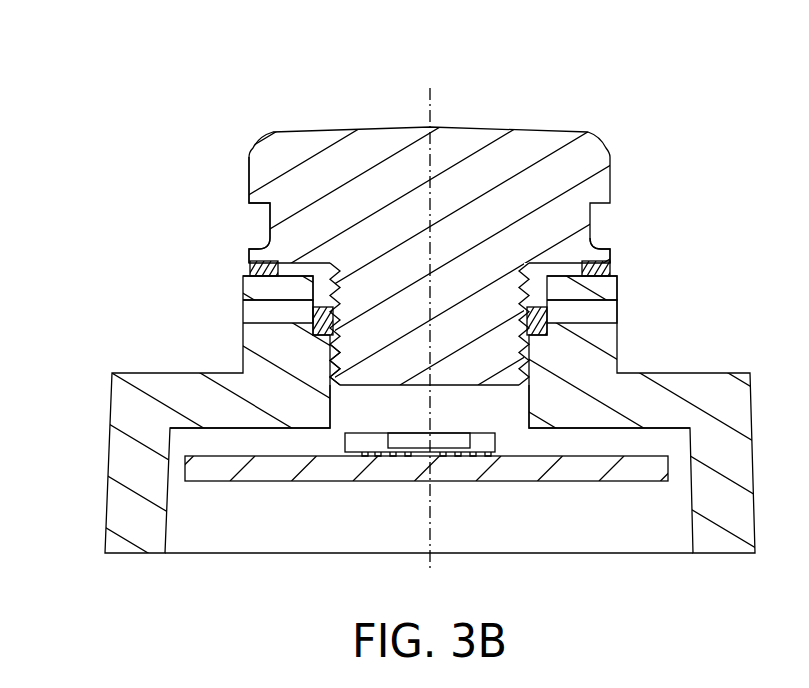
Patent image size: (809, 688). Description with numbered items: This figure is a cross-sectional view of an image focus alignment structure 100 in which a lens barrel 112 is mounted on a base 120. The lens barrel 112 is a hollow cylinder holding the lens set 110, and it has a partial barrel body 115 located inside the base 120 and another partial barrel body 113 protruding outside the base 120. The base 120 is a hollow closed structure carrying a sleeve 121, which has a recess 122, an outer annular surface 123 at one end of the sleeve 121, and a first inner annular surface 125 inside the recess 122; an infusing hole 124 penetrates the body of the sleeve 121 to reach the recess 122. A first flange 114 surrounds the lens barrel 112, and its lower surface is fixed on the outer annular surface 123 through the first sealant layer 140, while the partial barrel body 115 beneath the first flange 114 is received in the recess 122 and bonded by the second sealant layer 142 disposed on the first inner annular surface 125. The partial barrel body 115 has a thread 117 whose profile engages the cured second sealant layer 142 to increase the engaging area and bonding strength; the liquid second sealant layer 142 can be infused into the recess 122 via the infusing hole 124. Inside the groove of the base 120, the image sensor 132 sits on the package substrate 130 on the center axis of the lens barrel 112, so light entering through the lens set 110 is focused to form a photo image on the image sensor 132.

The image focus alignment structure 100 is at (52, 51).
The lens set 110 is at (481, 127).
The lens barrel 112 is at (633, 173).
The partial barrel body 113 is at (225, 137).
The first flange 114 is at (600, 252).
The partial barrel body 115 is at (338, 372).
The thread 117 is at (530, 290).
The base 120 is at (720, 533).
The sleeve 121 is at (604, 316).
The recess 122 is at (495, 407).
The outer annular surface 123 is at (270, 276).
The infusing hole 124 is at (606, 297).
The first inner annular surface 125 is at (315, 334).
The package substrate 130 is at (515, 470).
The image sensor 132 is at (408, 440).
The first sealant layer 140 is at (610, 272).
The second sealant layer 142 is at (538, 335).